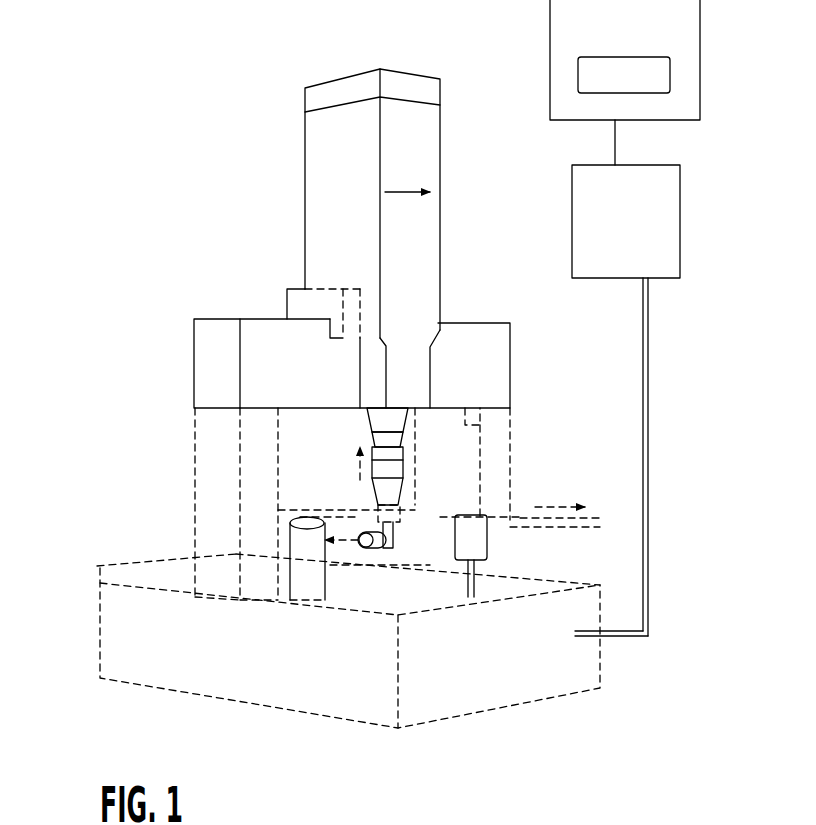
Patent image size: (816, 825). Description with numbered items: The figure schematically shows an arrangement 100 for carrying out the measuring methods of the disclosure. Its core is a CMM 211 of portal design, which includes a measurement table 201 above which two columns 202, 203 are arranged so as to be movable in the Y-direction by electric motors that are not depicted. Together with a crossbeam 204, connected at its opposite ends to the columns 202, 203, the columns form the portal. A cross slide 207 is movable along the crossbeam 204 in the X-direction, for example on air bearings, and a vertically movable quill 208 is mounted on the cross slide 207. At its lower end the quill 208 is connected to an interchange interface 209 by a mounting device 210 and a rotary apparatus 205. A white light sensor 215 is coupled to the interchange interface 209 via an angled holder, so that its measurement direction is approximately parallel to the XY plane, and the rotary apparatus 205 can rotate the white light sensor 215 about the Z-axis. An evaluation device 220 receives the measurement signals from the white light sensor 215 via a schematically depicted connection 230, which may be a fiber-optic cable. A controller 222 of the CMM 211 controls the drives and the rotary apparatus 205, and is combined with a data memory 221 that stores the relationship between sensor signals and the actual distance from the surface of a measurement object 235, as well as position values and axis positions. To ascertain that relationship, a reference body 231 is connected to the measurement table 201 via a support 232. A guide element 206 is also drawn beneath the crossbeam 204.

The arrangement 100 is at (130, 172).
The measurement table 201 is at (150, 563).
The column 202 is at (510, 480).
The column 203 is at (195, 470).
The crossbeam 204 is at (220, 318).
The rotary apparatus 205 is at (368, 480).
The guide 206 is at (480, 423).
The cross slide 207 is at (304, 170).
The quill 208 is at (430, 400).
The interchange interface 209 is at (400, 515).
The mounting device 210 is at (377, 447).
The CMM 211 is at (180, 705).
The white light sensor 215 is at (385, 548).
The evaluation device 220 is at (590, 268).
The data memory 221 is at (592, 77).
The controller 222 is at (550, 37).
The connection 230 is at (648, 505).
The reference body 231 is at (487, 540).
The support 232 is at (468, 590).
The measurement object 235 is at (288, 593).